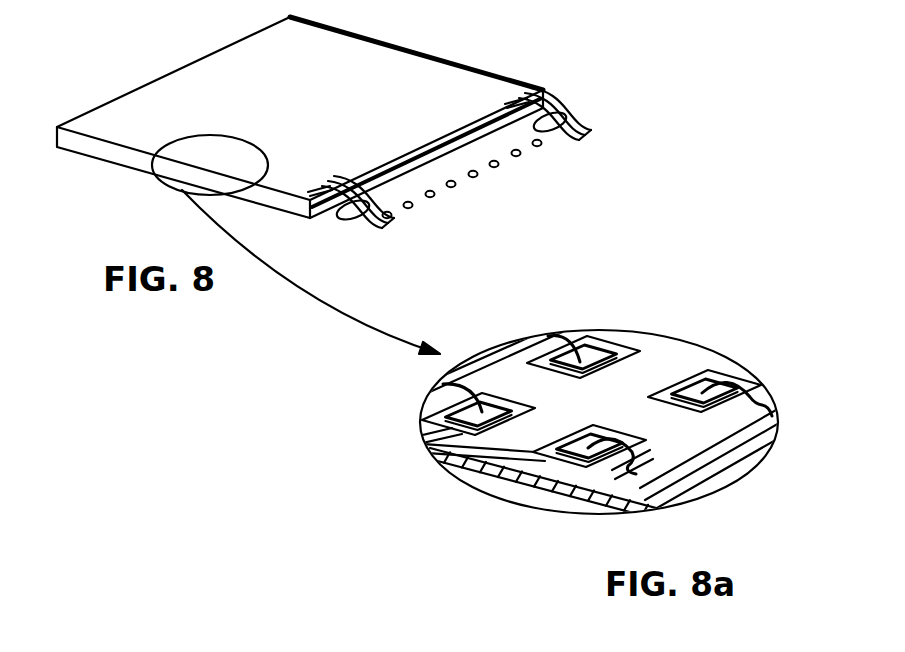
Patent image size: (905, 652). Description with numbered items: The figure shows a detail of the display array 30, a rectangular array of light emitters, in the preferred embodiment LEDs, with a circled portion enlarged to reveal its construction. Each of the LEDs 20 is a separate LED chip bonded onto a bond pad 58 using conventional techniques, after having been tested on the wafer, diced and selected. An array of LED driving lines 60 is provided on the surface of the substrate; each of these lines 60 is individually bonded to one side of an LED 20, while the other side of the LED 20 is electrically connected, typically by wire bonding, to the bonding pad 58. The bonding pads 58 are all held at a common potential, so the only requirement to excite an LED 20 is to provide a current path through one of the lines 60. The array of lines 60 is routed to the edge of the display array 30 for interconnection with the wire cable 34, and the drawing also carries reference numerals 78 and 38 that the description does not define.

In FIG. 8, the display array 30 is at (135, 108).
In FIG. 8, the wire cable 34 is at (341, 222).
In FIG. 8, the leader element 78 is at (227, 651).
In FIG. 8A, the LEDs 20 is at (602, 348).
In FIG. 8A, the bond pad 58 is at (664, 397).
In FIG. 8A, the LED driving lines 60 is at (692, 497).
In FIG. 8A, the edge connector strip 38 is at (508, 470).